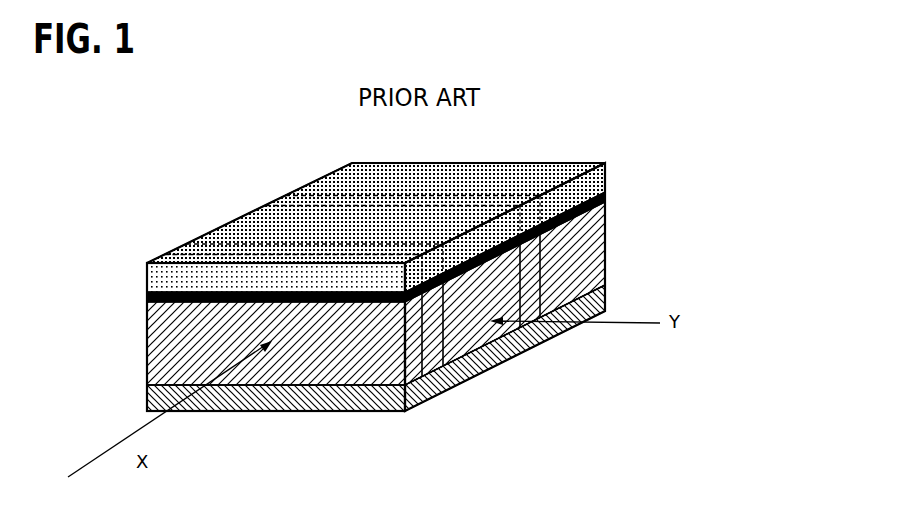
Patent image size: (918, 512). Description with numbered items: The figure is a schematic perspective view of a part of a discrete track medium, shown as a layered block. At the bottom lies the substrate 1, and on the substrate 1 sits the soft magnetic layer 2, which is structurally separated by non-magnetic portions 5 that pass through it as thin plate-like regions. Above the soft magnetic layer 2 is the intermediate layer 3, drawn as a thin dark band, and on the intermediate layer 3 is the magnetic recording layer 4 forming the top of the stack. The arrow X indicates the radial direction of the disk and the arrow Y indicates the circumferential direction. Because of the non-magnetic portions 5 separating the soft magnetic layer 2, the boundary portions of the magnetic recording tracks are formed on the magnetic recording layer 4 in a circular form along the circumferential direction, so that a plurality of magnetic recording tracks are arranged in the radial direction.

The substrate 1 is at (607, 287).
The soft magnetic layer 2 is at (607, 238).
The intermediate layer 3 is at (607, 182).
The magnetic recording layer 4 is at (607, 163).
The non-magnetic portions 5 is at (433, 338).